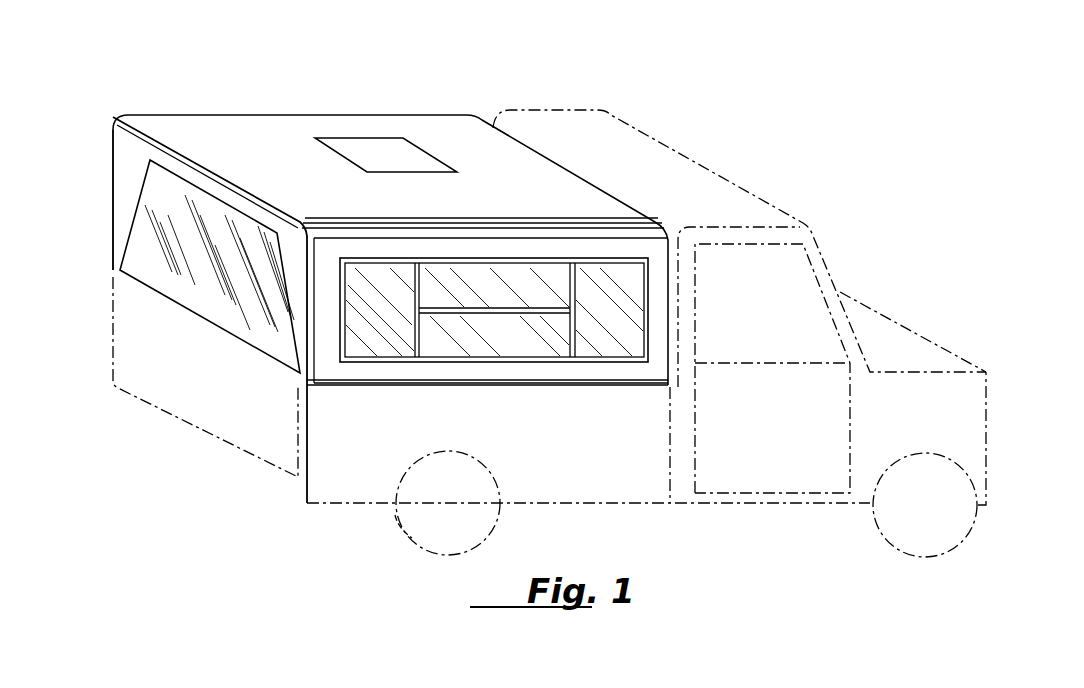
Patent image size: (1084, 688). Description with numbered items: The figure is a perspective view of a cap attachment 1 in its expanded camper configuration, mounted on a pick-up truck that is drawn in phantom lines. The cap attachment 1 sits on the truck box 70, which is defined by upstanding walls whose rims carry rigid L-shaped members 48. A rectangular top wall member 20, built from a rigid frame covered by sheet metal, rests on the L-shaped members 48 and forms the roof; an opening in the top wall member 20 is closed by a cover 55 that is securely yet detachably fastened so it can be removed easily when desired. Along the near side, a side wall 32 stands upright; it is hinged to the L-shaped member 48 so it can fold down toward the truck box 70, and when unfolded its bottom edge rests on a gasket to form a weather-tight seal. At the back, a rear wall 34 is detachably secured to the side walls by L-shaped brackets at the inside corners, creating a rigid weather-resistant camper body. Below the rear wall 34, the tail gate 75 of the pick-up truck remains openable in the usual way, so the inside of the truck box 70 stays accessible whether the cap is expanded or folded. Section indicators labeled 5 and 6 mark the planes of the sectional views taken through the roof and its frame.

The cap attachment 1 is at (108, 210).
The top wall member 20 is at (266, 118).
The rear wall 34 is at (122, 247).
The cover 55 is at (407, 160).
The L-shaped member 48 is at (465, 385).
The side wall 32 is at (567, 368).
The tail gate 75 is at (235, 415).
The truck box 70 is at (604, 482).
The section line 5- 5 is at (338, 85).
The section line 6- 6 is at (607, 157).